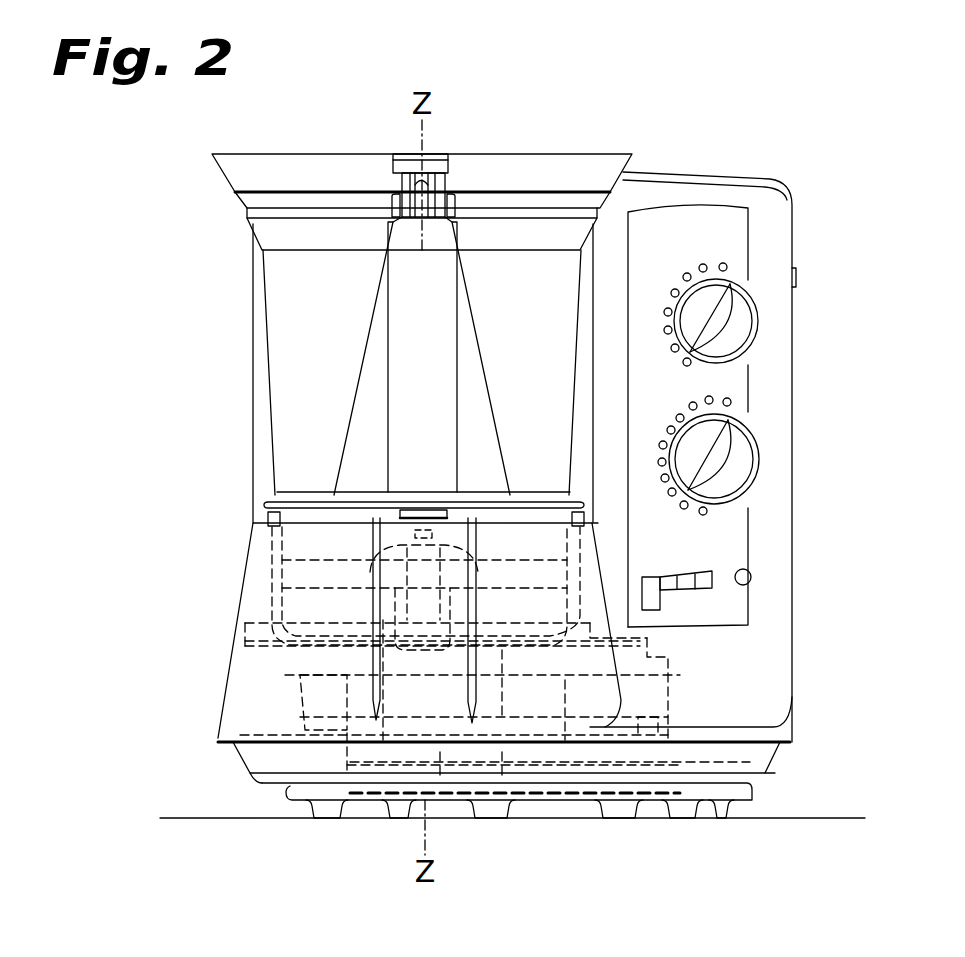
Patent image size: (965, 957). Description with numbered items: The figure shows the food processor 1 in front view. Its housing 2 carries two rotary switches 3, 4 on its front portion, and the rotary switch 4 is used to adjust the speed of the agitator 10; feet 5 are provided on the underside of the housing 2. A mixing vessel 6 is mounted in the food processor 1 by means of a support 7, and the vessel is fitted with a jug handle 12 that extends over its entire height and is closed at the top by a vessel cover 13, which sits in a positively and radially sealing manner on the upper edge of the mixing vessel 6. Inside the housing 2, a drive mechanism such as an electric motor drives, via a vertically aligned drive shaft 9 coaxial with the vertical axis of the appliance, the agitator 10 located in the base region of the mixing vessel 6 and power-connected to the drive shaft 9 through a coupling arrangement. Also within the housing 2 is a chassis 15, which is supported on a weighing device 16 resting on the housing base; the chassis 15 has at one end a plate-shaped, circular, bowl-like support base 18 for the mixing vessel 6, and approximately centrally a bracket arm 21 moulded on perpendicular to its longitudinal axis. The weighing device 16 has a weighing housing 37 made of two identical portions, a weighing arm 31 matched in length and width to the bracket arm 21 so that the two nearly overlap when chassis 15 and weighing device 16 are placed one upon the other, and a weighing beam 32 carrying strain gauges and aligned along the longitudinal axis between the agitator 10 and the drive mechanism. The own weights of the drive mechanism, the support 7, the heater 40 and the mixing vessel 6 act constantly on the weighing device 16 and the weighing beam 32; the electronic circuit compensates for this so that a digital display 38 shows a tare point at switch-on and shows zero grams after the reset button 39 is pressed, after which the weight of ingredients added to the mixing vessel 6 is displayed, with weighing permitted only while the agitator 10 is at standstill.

The food processor 1 is at (878, 215).
The housing 2 is at (773, 517).
The rotary switch 3 is at (732, 330).
The rotary switch 4 is at (731, 467).
The feet 5 is at (413, 810).
The mixing vessel 6 is at (252, 390).
The support 7 is at (252, 605).
The drive shaft 9 is at (405, 578).
The agitator 10 is at (387, 570).
The jug handle 12 is at (417, 328).
The vessel cover 13 is at (520, 173).
The chassis 15 is at (662, 694).
The weighing device 16 is at (690, 750).
The support base 18 is at (370, 708).
The bracket arm 21 is at (640, 683).
The weighing arm 31 is at (596, 780).
The weighing beam 32 is at (455, 752).
The weighing housing 37 is at (347, 778).
The digital display 38 is at (687, 582).
The reset button 39 is at (752, 577).
The heater 40 is at (300, 578).